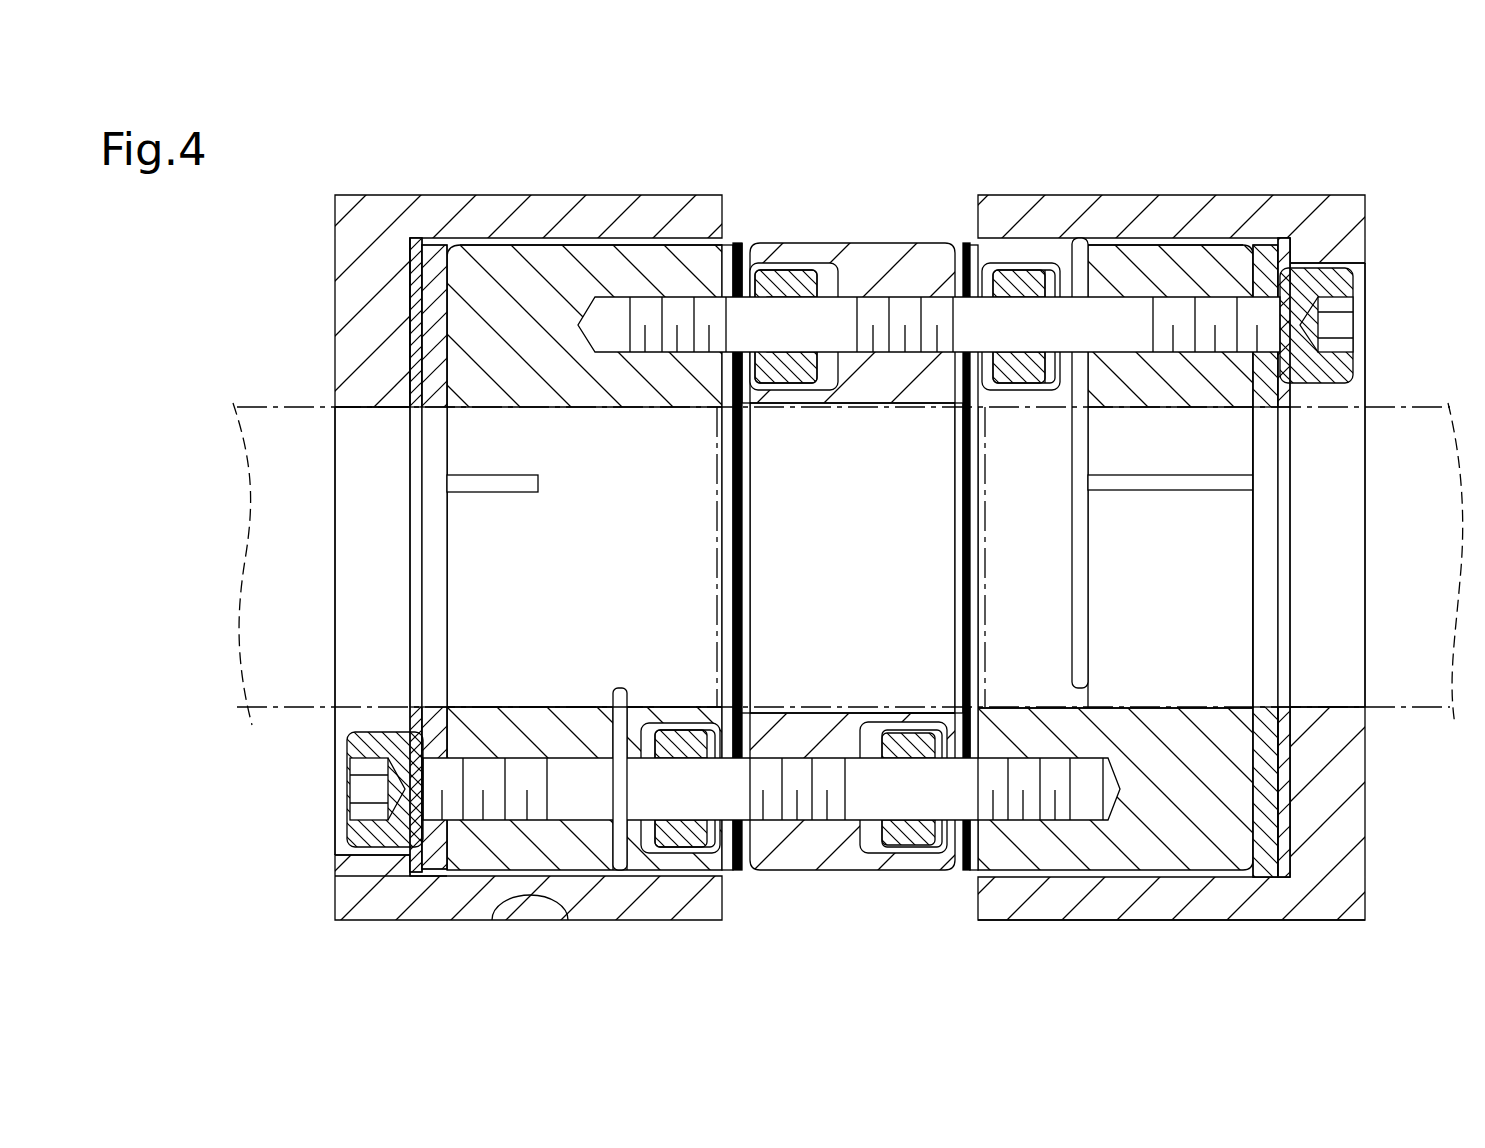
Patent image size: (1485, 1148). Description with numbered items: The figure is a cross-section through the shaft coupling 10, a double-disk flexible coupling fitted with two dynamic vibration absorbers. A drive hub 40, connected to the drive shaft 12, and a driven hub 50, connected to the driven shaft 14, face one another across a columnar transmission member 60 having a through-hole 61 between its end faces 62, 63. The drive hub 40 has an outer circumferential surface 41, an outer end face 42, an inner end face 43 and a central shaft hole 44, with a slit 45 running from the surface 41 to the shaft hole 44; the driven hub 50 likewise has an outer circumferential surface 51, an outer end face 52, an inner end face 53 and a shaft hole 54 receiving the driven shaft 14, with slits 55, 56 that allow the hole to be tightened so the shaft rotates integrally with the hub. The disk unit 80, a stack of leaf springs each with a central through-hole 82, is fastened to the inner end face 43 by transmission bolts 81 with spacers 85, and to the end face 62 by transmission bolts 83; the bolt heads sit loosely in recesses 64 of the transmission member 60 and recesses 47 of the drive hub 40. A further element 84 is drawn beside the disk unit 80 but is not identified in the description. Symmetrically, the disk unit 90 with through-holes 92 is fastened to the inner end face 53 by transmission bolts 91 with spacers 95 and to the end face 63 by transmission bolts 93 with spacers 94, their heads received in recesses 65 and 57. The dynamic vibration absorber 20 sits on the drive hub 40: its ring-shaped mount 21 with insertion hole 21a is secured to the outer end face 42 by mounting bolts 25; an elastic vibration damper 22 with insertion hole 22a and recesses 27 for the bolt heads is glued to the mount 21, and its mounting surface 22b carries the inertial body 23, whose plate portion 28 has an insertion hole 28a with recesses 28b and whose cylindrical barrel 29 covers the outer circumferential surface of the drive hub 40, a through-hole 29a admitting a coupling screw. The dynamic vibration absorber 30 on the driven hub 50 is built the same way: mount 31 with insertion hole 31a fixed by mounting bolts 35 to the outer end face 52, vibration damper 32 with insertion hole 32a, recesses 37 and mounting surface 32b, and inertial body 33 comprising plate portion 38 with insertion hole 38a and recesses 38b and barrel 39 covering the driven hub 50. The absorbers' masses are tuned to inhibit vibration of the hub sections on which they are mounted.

The shaft coupling 10 is at (836, 208).
The drive shaft 12 is at (272, 405).
The driven shaft 14 is at (1425, 405).
The dynamic vibration absorber 20 is at (468, 965).
The mount 21 is at (441, 872).
The insertion hole 21a is at (440, 408).
The vibration damper 22 is at (416, 878).
The insertion hole 22a is at (415, 420).
The mounting surface 22b is at (412, 348).
The inertial body 23 is at (378, 906).
The mounting bolts 25 is at (347, 742).
The recesses 27 is at (396, 856).
The plate portion 28 is at (335, 305).
The insertion hole 28a is at (356, 408).
The recesses 28b is at (335, 851).
The barrel 29 is at (560, 195).
The through-hole 29a is at (540, 920).
The dynamic vibration absorber 30 is at (1336, 165).
The mount 31 is at (1258, 248).
The insertion hole 31a is at (1258, 706).
The vibration damper 32 is at (1284, 238).
The insertion hole 32a is at (1290, 705).
The mounting surface 32b is at (1290, 778).
The inertial body 33 is at (1320, 216).
The mounting bolts 35 is at (1355, 300).
The recesses 37 is at (1292, 272).
The plate portion 38 is at (1366, 770).
The insertion hole 38a is at (1366, 708).
The recesses 38b is at (1366, 264).
The barrel 39 is at (1212, 921).
The drive hub 40 is at (680, 262).
The outer circumferential surface 41 is at (636, 245).
The outer end face 42 is at (447, 574).
The inner end face 43 is at (722, 660).
The shaft hole 44 is at (535, 696).
The slit 45 is at (621, 872).
The recesses 47 is at (621, 704).
The driven hub 50 is at (1160, 262).
The outer circumferential surface 51 is at (1110, 245).
The outer end face 52 is at (1255, 605).
The inner end face 53 is at (978, 644).
The shaft hole 54 is at (1147, 705).
The slit 55 is at (1086, 575).
The slit 56 is at (1172, 490).
The recesses 57 is at (1052, 388).
The transmission member 60 is at (880, 243).
The through-hole 61 is at (790, 712).
The end face 62 is at (751, 468).
The end face 63 is at (955, 668).
The recesses 64 is at (862, 402).
The recesses 65 is at (865, 714).
The disk unit 80 is at (738, 243).
The transmission bolts 81 is at (800, 392).
The through-hole 82 is at (756, 445).
The transmission bolts 83 is at (786, 818).
The lower spacer plate 84 is at (738, 870).
The spacer 85 is at (746, 252).
The disk unit 90 is at (965, 243).
The transmission bolts 91 is at (896, 846).
The through-hole 92 is at (984, 425).
The transmission bolts 93 is at (1012, 392).
The spacer 94 is at (969, 262).
The spacer 95 is at (966, 870).